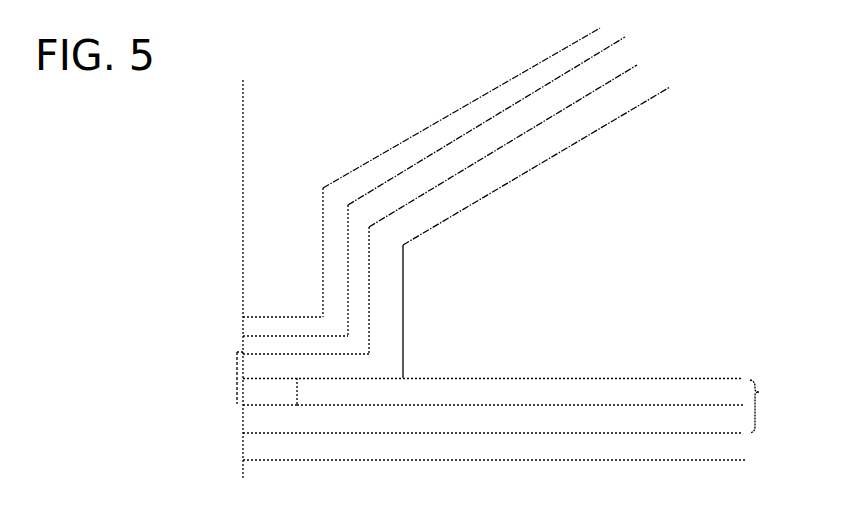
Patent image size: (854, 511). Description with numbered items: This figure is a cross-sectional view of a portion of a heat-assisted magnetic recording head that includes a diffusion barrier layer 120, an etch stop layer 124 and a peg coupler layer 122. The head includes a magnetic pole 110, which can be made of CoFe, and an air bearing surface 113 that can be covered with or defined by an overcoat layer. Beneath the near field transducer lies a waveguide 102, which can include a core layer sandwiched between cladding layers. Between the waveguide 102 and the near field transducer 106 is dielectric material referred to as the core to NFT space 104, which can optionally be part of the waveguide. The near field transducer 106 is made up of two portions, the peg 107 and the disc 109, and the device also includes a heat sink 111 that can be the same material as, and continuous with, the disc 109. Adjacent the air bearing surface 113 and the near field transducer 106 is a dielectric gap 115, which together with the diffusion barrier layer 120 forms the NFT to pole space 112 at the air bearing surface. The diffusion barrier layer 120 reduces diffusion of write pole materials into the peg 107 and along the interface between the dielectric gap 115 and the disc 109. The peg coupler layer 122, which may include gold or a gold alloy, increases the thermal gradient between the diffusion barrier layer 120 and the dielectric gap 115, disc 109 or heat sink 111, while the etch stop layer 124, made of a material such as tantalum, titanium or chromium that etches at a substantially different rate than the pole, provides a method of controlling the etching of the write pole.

The waveguide 102 is at (455, 496).
The core to NFT space (CNS) 104 is at (444, 457).
The near field transducer (NFT) 106 is at (784, 406).
The peg 107 is at (297, 431).
The disc 109 is at (475, 400).
The magnetic pole 110 is at (362, 152).
The heat sink 111 is at (545, 267).
The NFT to pole space (NPS) 112 is at (205, 378).
The air bearing surface (ABS) 113 is at (241, 239).
The dielectric gap 115 is at (253, 393).
The diffusion barrier layer 120 is at (528, 74).
The peg coupler layer 122 is at (509, 155).
The etch stop layer 124 is at (356, 241).